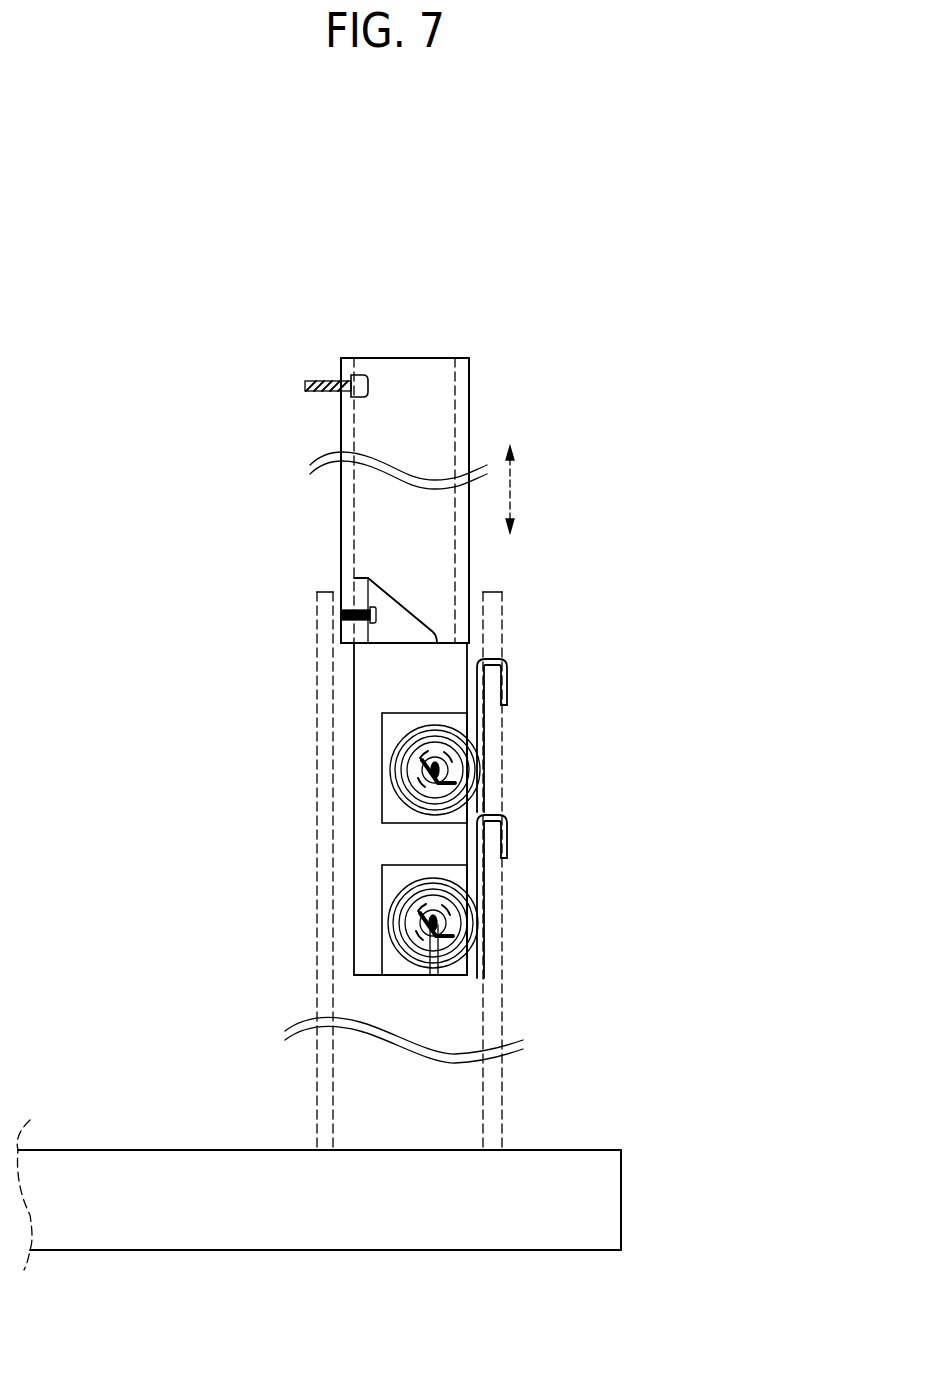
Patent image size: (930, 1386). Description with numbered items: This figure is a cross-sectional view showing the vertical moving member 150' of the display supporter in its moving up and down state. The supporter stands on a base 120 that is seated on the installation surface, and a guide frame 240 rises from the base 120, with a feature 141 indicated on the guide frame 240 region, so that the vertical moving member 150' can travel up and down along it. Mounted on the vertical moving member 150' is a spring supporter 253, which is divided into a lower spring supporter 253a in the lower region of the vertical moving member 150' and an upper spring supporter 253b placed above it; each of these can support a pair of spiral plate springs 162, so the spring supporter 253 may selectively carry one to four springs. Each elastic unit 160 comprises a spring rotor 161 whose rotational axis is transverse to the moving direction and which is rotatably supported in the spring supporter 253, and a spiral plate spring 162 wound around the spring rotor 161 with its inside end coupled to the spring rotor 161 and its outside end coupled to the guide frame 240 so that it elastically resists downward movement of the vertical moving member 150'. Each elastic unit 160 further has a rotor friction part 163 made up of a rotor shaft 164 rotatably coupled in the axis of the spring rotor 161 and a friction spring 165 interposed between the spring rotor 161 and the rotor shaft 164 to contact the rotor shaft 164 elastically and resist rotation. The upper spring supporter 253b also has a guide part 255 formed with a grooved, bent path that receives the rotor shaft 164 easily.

The base 120 is at (293, 1240).
The guide hole 141 is at (447, 1116).
The vertical moving member 150' is at (438, 500).
The elastic unit 160 is at (549, 821).
The spring rotor 161 is at (455, 742).
The spiral plate spring 162 is at (650, 792).
The rotor friction part 163 is at (531, 867).
The rotor shaft 164 is at (452, 768).
The friction spring 165 is at (447, 797).
The guide frame 240 is at (493, 1086).
The spring supporter 253 is at (305, 809).
The lower spring supporter 253a is at (382, 923).
The upper spring supporter 253b is at (383, 773).
The guide part 255 is at (413, 763).